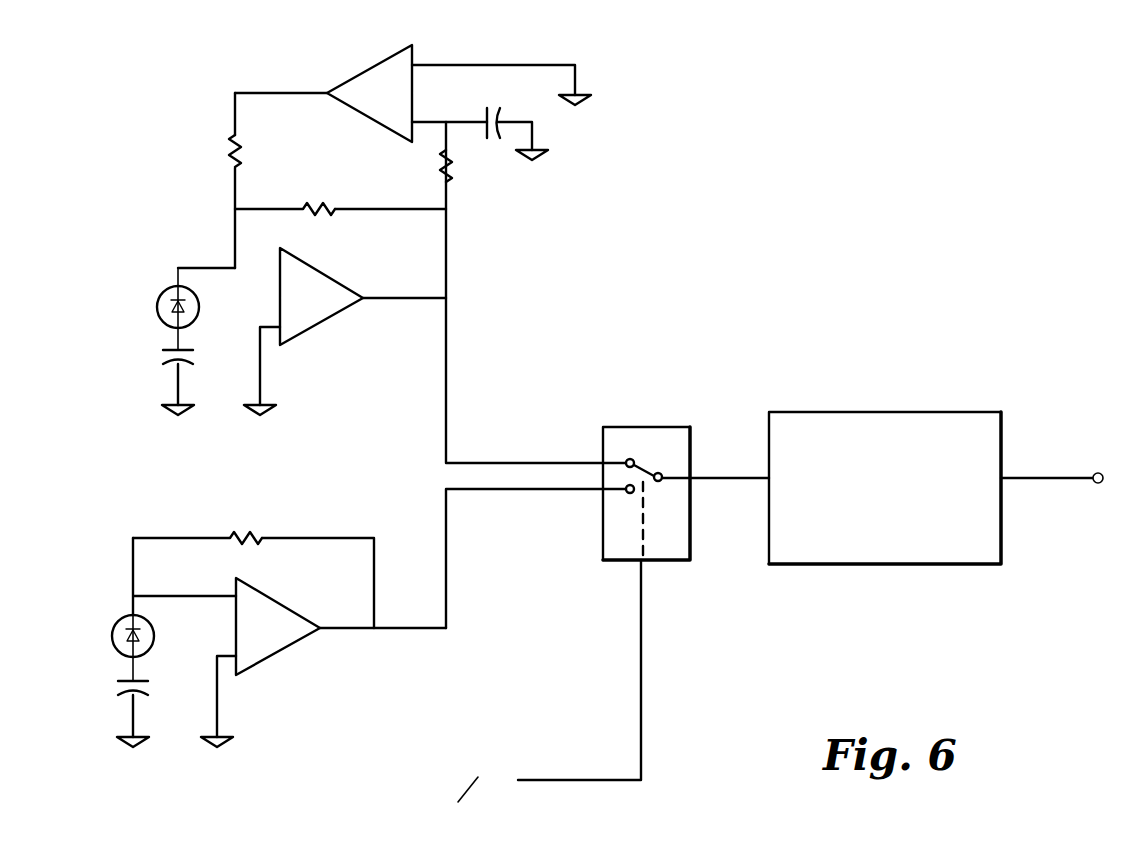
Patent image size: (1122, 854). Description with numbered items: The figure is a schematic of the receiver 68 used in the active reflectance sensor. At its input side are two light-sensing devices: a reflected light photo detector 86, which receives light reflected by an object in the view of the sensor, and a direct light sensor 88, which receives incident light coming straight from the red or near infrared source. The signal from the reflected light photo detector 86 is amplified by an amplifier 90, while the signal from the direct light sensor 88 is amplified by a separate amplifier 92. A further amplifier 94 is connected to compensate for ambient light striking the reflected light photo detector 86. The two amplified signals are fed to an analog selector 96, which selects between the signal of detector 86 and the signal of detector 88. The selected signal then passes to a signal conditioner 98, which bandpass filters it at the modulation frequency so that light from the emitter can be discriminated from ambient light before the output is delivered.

The receiver 68 is at (763, 342).
The reflected light photo detector 86 is at (160, 297).
The direct light sensor 88 is at (115, 627).
The amplifier 90 is at (312, 329).
The amplifier 92 is at (278, 653).
The amplifier 94 is at (375, 66).
The analog selector 96 is at (643, 427).
The signal conditioner 98 is at (887, 564).